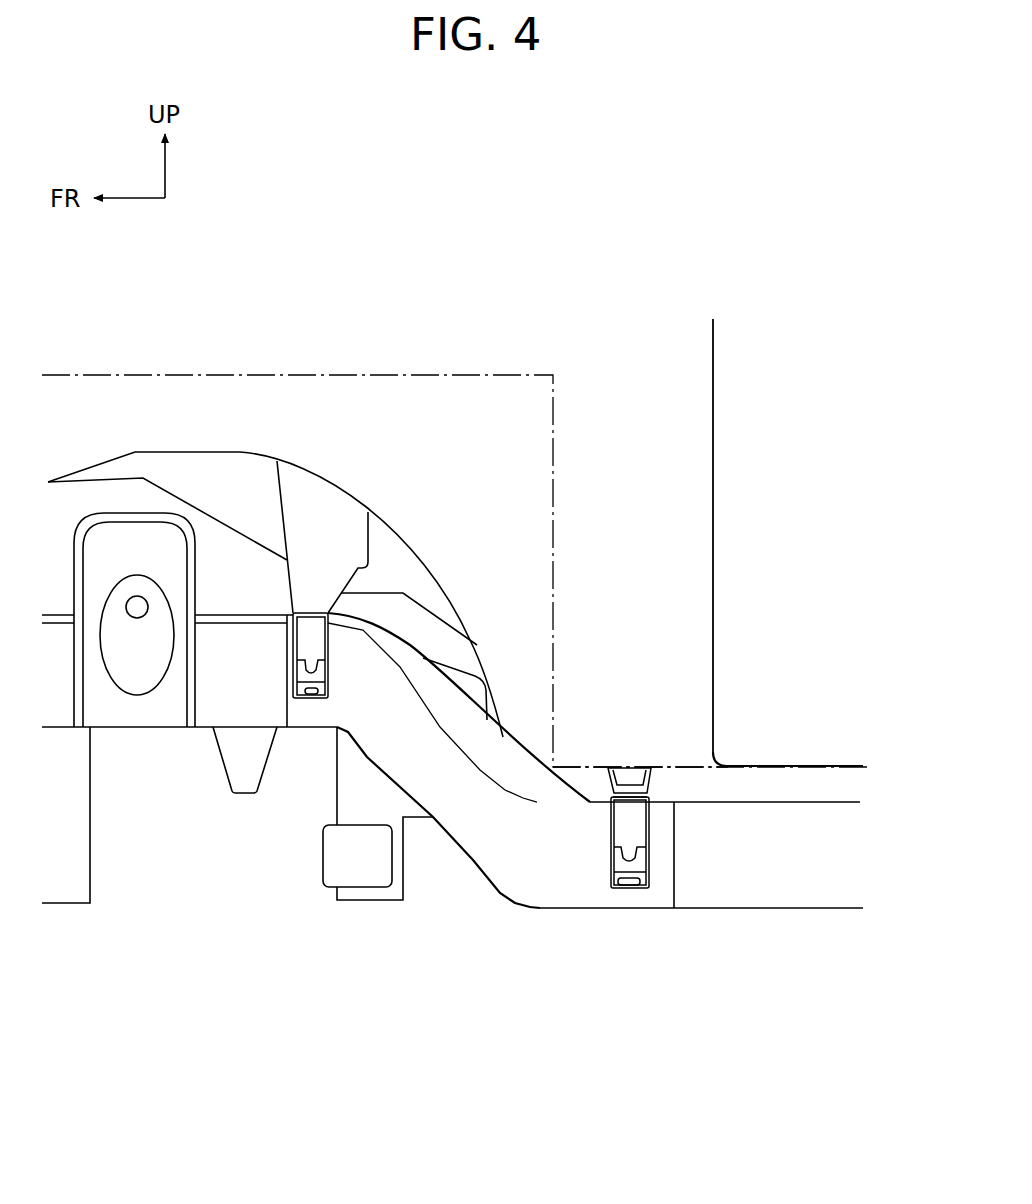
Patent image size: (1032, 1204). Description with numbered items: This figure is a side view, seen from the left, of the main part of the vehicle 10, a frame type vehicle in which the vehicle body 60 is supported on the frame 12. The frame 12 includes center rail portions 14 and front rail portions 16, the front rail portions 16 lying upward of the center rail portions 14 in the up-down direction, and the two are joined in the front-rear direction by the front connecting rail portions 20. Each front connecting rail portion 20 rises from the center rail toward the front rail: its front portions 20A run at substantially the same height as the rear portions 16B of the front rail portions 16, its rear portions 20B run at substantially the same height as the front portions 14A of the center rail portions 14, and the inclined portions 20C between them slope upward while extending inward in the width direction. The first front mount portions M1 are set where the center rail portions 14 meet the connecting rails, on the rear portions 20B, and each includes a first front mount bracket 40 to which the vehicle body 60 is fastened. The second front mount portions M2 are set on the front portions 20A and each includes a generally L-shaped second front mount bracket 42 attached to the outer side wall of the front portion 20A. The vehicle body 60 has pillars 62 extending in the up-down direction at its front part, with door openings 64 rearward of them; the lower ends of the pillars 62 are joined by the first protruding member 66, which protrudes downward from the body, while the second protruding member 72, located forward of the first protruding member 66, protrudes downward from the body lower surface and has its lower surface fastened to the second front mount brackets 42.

The vehicle 10 is at (859, 225).
The frame 12 is at (301, 960).
The center rail portions 14 is at (813, 911).
The front portions of the center rail portions 14A is at (690, 910).
The front rail portions 16 is at (52, 610).
The rear portions of the front rail portions 16B is at (258, 730).
The front connecting rail portions 20 is at (474, 864).
The front portions of the front connecting rail portions 20A is at (312, 730).
The rear portions of the front connecting rail portions 20B is at (666, 910).
The inclined portions 20C is at (445, 830).
The first front mount bracket 40 is at (609, 880).
The second front mount bracket 42 is at (283, 683).
The vehicle body 60 is at (778, 368).
The pillars 62 is at (713, 523).
The door openings 64 is at (795, 766).
The first protruding member 66 is at (650, 785).
The second protruding member 72 is at (277, 497).
The first front mount portions M1 is at (599, 872).
The second front mount portions M2 is at (274, 633).